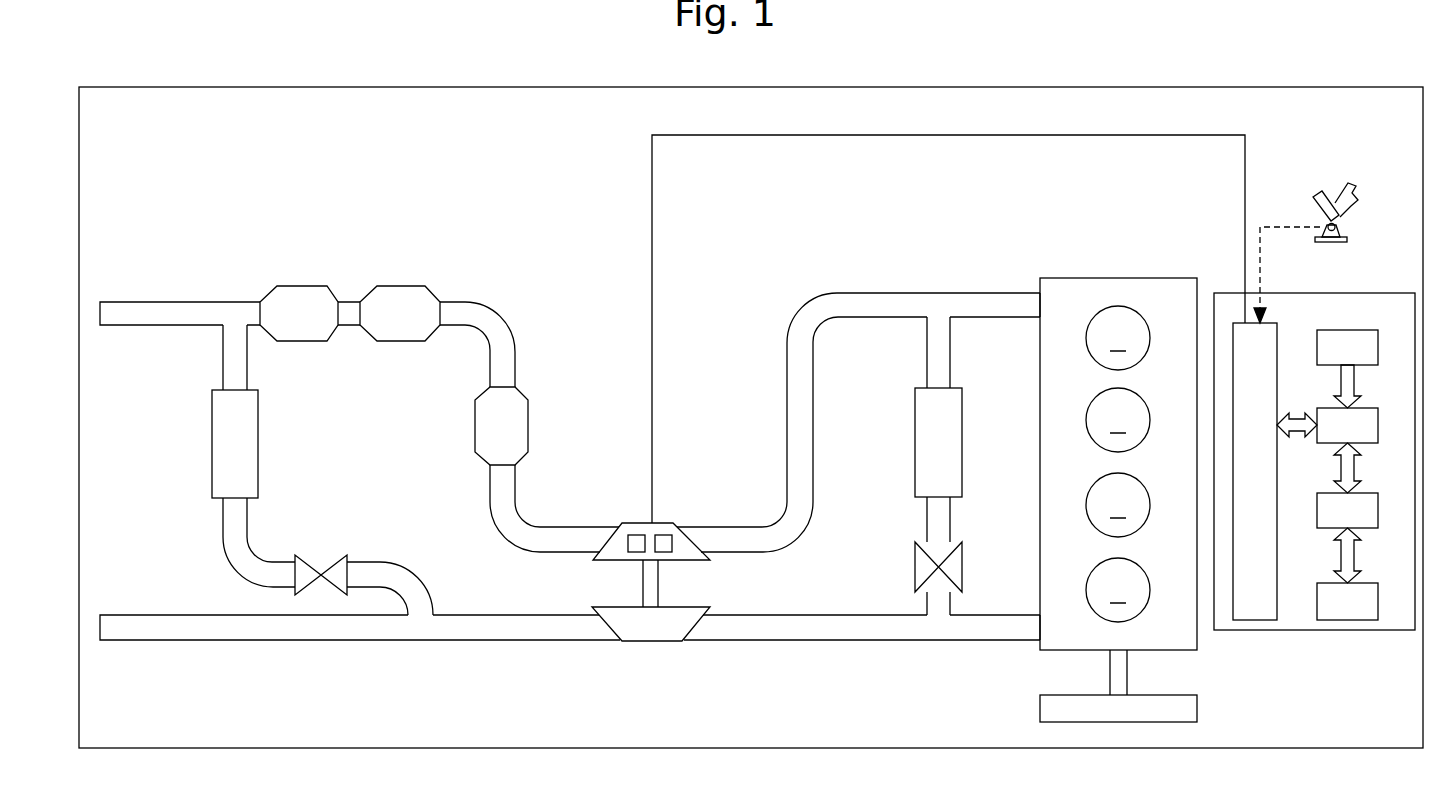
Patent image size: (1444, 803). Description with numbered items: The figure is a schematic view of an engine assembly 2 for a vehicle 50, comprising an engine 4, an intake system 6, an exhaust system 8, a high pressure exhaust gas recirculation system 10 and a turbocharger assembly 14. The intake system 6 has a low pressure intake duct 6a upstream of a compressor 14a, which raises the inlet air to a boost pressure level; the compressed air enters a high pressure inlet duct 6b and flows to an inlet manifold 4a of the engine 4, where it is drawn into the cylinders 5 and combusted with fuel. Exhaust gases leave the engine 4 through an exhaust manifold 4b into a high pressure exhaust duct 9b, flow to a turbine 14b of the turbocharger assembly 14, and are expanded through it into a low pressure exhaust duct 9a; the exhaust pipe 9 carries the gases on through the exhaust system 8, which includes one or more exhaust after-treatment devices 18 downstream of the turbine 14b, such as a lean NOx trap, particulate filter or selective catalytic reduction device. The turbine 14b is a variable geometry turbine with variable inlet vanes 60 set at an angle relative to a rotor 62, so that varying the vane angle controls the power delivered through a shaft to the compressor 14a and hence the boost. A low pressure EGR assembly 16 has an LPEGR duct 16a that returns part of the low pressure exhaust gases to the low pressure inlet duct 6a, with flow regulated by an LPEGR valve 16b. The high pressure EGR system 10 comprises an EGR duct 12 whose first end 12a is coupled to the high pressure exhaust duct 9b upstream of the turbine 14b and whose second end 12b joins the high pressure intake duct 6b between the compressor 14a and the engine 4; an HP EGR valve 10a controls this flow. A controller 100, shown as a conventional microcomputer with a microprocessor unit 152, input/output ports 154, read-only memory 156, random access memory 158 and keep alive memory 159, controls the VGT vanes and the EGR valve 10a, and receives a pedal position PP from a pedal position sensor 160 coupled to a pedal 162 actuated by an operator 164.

The engine assembly 2 is at (1098, 203).
The engine 4 is at (1090, 457).
The inlet manifold 4a is at (1038, 623).
The exhaust manifold 4b is at (1037, 305).
The cylinders 5 is at (1118, 464).
The intake system 6 is at (570, 661).
The low pressure intake duct 6a is at (207, 632).
The high pressure inlet duct 6b is at (875, 632).
The exhaust system 8 is at (742, 306).
The exhaust pipe 9 is at (529, 427).
The low pressure exhaust duct 9a is at (232, 310).
The high pressure exhaust duct 9b is at (848, 300).
The high pressure exhaust gas recirculation system 10 is at (870, 459).
The HP EGR valve 10a is at (928, 582).
The EGR duct 12 is at (956, 459).
The first end of the HP EGR duct 12a is at (938, 313).
The second end of the HP EGR duct 12b is at (938, 615).
The turbocharger assembly 14 is at (687, 570).
The compressor 14a is at (633, 632).
The turbine 14b is at (659, 500).
The low pressure EGR assembly 16 is at (276, 470).
The LPEGR duct 16a is at (230, 367).
The LPEGR valve 16b is at (307, 568).
The exhaust after-treatment devices 18 is at (351, 276).
The vehicle 50 is at (140, 87).
The variable inlet vanes 60 is at (633, 523).
The rotor 62 is at (675, 527).
The controller 100 is at (1314, 486).
The microprocessor unit 152 is at (1378, 427).
The input/output ports 154 is at (1277, 345).
The read-only memory 156 is at (1378, 350).
The random access memory 158 is at (1378, 510).
The keep alive memory 159 is at (1378, 600).
The pedal position sensor 160 is at (1345, 229).
The pedal 162 is at (1310, 203).
The operator 164 is at (1348, 184).
The pedal position PP is at (1262, 268).